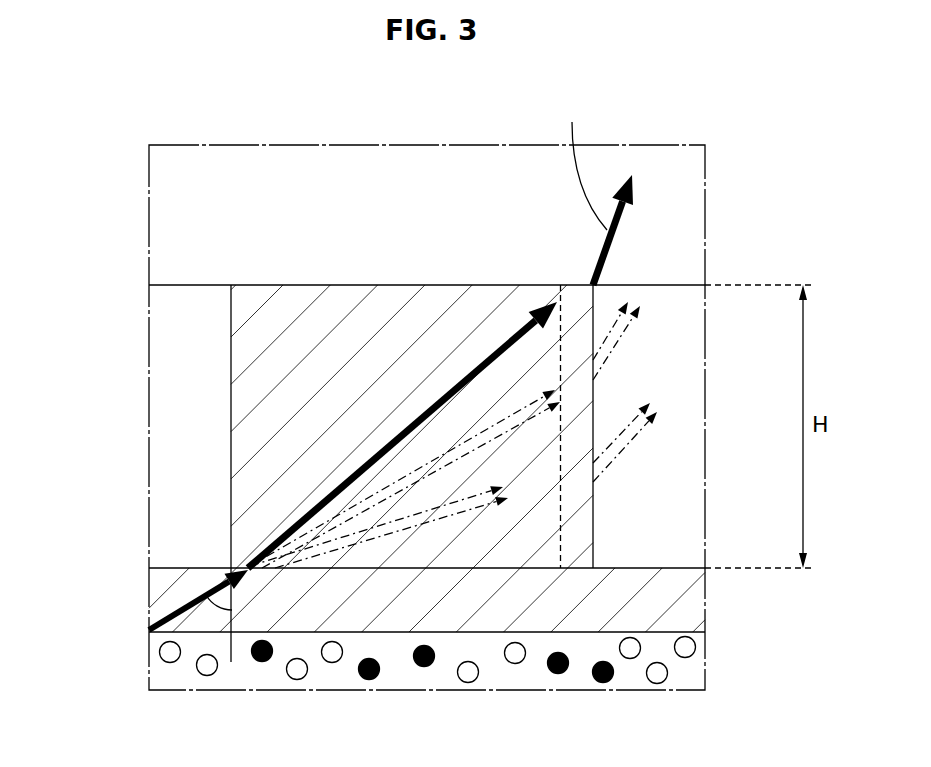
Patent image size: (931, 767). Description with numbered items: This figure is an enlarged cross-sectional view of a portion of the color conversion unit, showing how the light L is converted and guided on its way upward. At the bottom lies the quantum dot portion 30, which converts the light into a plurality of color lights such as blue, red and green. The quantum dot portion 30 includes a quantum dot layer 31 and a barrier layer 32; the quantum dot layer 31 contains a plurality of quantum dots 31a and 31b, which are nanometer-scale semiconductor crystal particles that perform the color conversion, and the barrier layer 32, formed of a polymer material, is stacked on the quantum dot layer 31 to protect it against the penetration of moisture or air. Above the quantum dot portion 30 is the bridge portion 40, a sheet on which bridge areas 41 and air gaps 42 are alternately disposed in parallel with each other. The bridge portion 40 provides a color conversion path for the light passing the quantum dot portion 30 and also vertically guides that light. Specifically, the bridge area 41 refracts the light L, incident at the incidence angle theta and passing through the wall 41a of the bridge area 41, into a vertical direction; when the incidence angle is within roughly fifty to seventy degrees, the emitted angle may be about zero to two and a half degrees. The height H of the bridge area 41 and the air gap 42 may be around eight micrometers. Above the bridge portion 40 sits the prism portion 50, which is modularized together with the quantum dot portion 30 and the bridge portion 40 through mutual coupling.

The quantum dot portion 30 is at (767, 577).
The quantum dot layer 31 is at (688, 673).
The quantum dot 31a is at (515, 664).
The quantum dot 31b is at (424, 667).
The barrier layer 32 is at (688, 608).
The bridge portion 40 is at (83, 358).
The bridge area 41 is at (265, 412).
The wall 41a is at (578, 527).
The air gap 42 is at (188, 482).
The prism portion 50 is at (682, 227).